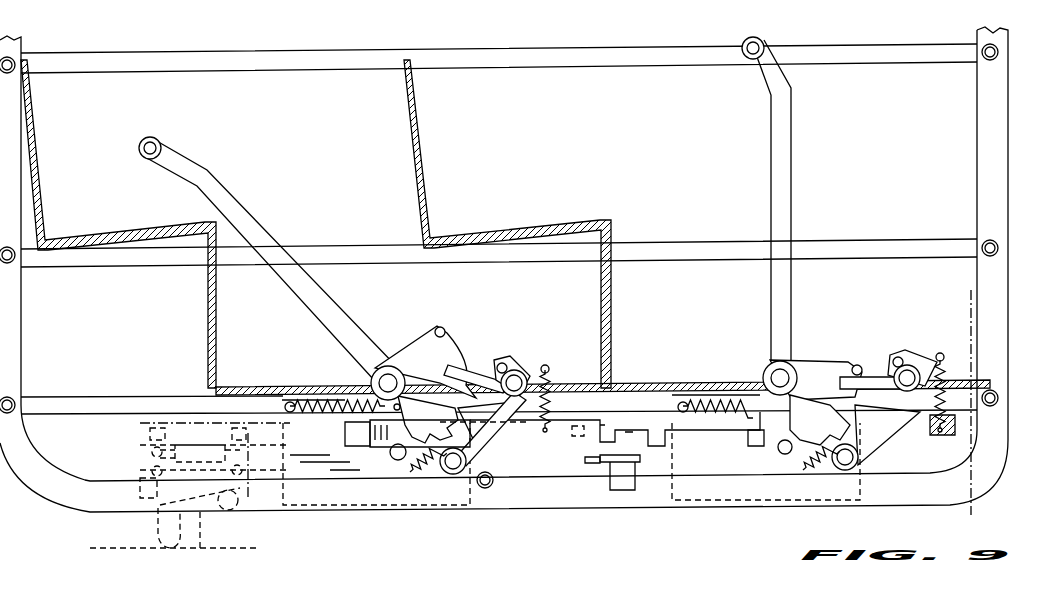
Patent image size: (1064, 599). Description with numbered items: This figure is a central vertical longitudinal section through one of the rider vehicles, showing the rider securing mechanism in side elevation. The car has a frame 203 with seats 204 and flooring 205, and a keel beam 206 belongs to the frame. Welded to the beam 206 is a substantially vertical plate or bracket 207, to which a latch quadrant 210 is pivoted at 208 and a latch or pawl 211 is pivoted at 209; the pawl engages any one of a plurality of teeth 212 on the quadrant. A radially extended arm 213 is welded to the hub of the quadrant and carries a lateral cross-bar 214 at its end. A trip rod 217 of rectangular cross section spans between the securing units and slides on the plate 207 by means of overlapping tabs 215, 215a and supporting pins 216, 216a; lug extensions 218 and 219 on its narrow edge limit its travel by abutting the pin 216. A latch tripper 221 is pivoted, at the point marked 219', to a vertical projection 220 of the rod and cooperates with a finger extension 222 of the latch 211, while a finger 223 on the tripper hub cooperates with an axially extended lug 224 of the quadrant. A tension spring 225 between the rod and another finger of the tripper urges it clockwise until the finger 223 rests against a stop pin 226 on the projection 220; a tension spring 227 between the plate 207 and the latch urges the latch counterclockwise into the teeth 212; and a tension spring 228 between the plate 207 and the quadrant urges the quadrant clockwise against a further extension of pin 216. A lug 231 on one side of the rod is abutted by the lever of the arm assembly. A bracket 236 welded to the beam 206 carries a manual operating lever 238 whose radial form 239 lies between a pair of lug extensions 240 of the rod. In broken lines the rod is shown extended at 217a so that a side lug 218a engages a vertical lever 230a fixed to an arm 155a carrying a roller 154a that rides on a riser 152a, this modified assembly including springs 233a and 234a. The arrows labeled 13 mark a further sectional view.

The section line 13 is at (983, 517).
The riser 152a is at (99, 552).
The roller 154a is at (150, 551).
The arm 155a is at (205, 549).
The frame 203 is at (982, 108).
The seats 204 is at (110, 242).
The flooring 205 is at (715, 386).
The keel beam 206 is at (518, 482).
The plate or bracket 207 is at (312, 472).
The pivot 208 is at (385, 383).
The pivot 209 is at (455, 475).
The latch quadrant 210 is at (415, 362).
The latch or pawl 211 is at (480, 440).
The teeth 212 is at (676, 413).
The radially extended arm 213 is at (196, 156).
The lateral cross-bar 214 is at (148, 140).
The overlapping tab 215 is at (358, 447).
The overlapping tab 215a is at (757, 445).
The supporting pin 216 is at (392, 446).
The supporting pin 216a is at (787, 456).
The trip rod 217 is at (628, 438).
The extended bar 217a is at (150, 430).
The lug extension 218 is at (372, 448).
The side lug 218a is at (235, 436).
The lug extension 219 is at (392, 507).
The pin 219' is at (533, 347).
The vertical projection 220 is at (530, 426).
The latch tripper 221 is at (520, 375).
The finger extension 222 is at (520, 430).
The finger 223 is at (475, 366).
The axially extended lug 224 is at (438, 330).
The tension spring 225 is at (548, 372).
The stop pin 226 is at (502, 363).
The tension spring 227 is at (425, 482).
The tension spring 228 is at (305, 402).
The vertical lever 230a is at (240, 524).
The lug 231 is at (612, 428).
The spring 233a is at (150, 446).
The spring 234a is at (150, 466).
The bracket 236 is at (636, 468).
The manual operating lever 238 is at (600, 466).
The radial form 239 is at (650, 450).
The lug extensions 240 is at (655, 440).